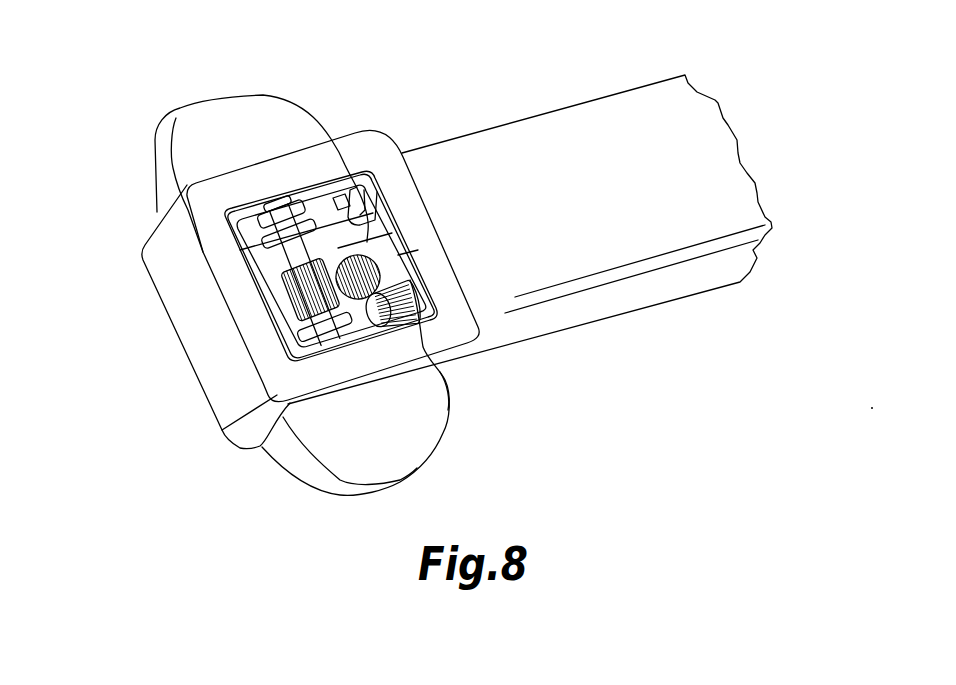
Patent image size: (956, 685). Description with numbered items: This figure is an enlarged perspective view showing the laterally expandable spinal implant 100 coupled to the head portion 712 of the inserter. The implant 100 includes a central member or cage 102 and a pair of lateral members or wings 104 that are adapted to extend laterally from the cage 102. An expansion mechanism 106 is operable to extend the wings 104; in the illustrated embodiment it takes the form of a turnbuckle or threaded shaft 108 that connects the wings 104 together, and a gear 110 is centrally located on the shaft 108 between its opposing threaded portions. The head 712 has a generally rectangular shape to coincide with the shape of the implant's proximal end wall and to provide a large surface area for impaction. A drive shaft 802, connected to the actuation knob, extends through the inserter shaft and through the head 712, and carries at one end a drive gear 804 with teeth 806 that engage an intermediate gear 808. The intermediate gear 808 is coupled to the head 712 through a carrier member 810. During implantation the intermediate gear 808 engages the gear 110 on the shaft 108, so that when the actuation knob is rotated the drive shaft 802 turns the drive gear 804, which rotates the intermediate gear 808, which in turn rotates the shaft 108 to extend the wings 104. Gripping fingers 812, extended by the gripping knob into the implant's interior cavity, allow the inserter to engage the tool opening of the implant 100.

The laterally expandable spinal implant 100 is at (145, 127).
The central member or cage 102 is at (158, 299).
The lateral members or wings 104 is at (208, 120).
The expansion mechanism 106 is at (248, 212).
The turnbuckle or threaded shaft 108 is at (283, 310).
The gear 110 is at (285, 312).
The head portion 712 is at (458, 178).
The drive shaft 802 is at (410, 290).
The drive gear 804 is at (415, 248).
The teeth 806 is at (447, 398).
The intermediate gear 808 is at (350, 213).
The carrier member 810 is at (368, 200).
The gripping fingers 812 is at (352, 245).